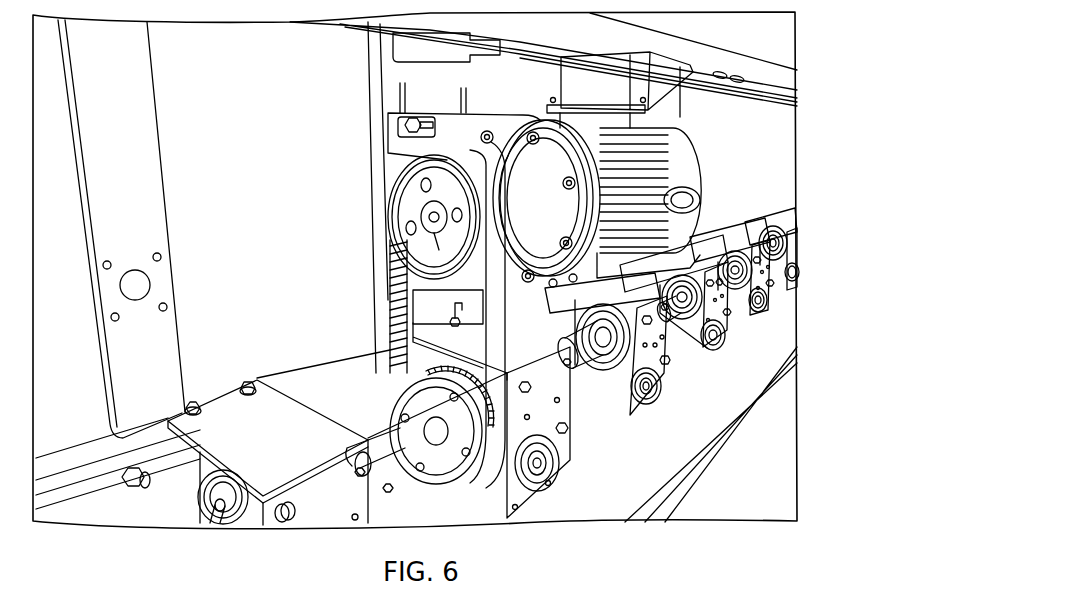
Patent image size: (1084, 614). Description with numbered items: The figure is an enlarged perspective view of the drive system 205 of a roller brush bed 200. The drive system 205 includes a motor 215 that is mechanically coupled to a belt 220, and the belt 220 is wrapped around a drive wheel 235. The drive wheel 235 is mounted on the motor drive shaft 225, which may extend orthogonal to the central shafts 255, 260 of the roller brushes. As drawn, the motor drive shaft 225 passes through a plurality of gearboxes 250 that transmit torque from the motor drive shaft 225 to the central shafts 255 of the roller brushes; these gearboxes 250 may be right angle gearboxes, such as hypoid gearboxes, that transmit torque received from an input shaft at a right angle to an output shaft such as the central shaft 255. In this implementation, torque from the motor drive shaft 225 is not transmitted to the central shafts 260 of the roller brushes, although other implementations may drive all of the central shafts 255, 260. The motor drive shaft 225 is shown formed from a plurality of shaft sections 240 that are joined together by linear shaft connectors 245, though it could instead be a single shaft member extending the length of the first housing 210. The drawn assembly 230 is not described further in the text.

The roller brush bed 200 is at (67, 613).
The drive system 205 is at (781, 131).
The first housing 210 is at (722, 46).
The motor 215 is at (690, 160).
The belt 220 is at (390, 266).
The motor drive shaft 225 is at (217, 530).
The drive assembly 230 is at (277, 200).
The drive wheel 235 is at (400, 378).
The shaft sections 240 is at (335, 432).
The linear shaft connectors 245 is at (608, 350).
The gearboxes 250 is at (300, 515).
The central shafts 255 is at (547, 485).
The central shafts 260 is at (390, 492).